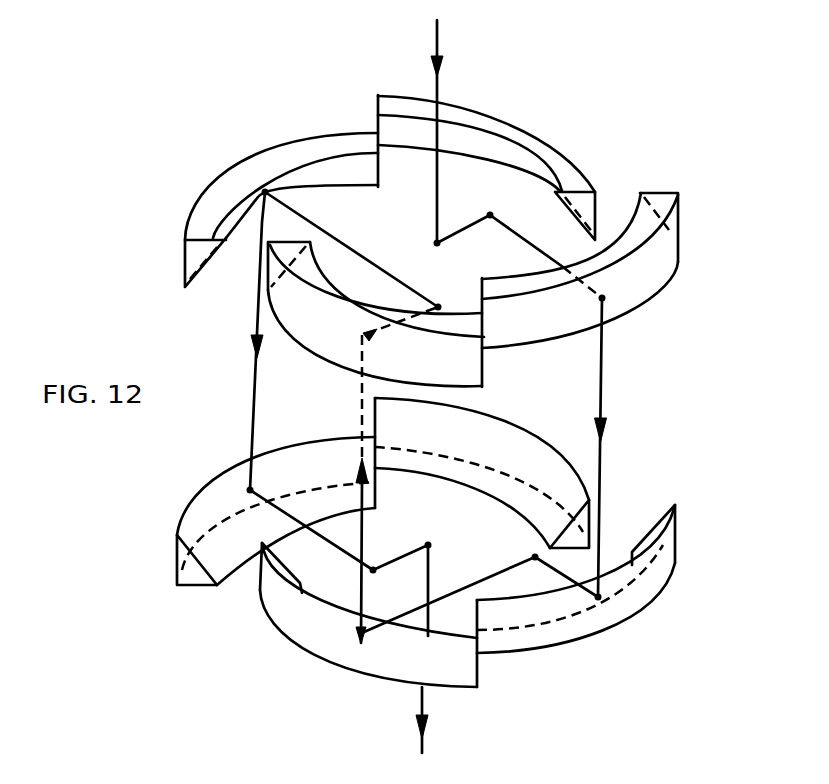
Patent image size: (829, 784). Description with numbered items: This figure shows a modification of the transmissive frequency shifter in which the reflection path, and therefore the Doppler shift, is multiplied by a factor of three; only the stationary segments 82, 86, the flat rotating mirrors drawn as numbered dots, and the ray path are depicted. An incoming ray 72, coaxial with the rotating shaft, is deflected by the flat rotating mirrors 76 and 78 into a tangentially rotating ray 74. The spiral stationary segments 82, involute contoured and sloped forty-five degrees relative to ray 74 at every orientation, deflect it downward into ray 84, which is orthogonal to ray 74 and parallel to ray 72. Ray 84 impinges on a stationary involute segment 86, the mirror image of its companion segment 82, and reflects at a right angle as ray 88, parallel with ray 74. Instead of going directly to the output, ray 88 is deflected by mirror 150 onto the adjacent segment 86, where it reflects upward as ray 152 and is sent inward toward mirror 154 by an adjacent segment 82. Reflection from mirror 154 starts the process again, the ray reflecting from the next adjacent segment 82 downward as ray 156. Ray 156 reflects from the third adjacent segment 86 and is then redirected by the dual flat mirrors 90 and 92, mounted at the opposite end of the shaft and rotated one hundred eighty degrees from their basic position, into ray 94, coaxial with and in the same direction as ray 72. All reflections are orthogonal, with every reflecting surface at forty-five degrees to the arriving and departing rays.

The incoming ray 72 is at (440, 49).
The tangentially rotating ray 74 is at (527, 247).
The flat mirror 76 is at (427, 242).
The flat mirror 78 is at (487, 214).
The spiral stationary segment 82 is at (378, 105).
The ray 84 is at (603, 404).
The stationary involute segment 86 is at (205, 498).
The ray 88 is at (565, 584).
The flat mirror 90 is at (375, 573).
The flat mirror 92 is at (428, 544).
The ray 94 is at (448, 720).
The mirror 150 is at (535, 557).
The ray 152 is at (357, 393).
The mirror 154 is at (440, 305).
The ray 156 is at (252, 373).